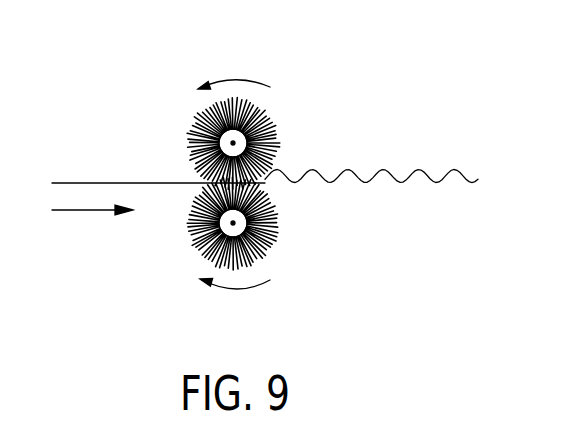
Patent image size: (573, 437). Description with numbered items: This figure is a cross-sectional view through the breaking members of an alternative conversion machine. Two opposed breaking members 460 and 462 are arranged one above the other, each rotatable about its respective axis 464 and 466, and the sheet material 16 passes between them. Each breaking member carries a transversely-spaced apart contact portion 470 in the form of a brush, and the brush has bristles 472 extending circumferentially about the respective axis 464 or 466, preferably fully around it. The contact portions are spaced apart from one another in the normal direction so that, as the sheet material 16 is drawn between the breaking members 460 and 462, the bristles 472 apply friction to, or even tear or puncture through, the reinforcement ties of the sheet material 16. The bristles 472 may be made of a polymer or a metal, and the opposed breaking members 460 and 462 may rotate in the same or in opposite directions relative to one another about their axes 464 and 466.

The sheet material 16 is at (80, 183).
The breaking member 460 is at (284, 101).
The breaking member 462 is at (285, 242).
The axis 464 is at (233, 143).
The axis 466 is at (233, 223).
The contact portion 470 is at (289, 148).
The bristles 472 is at (205, 251).